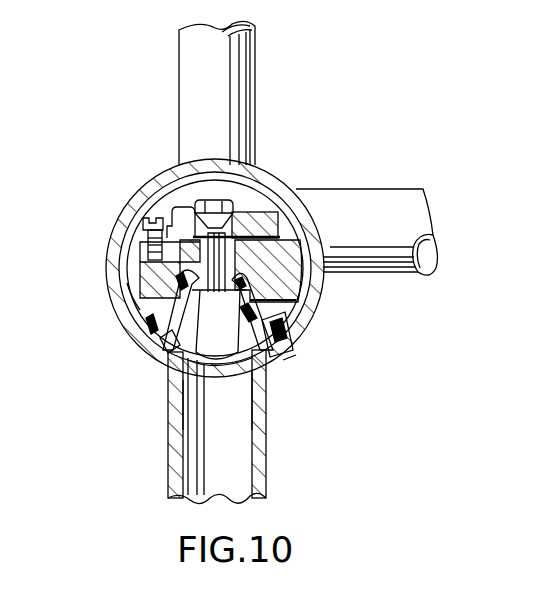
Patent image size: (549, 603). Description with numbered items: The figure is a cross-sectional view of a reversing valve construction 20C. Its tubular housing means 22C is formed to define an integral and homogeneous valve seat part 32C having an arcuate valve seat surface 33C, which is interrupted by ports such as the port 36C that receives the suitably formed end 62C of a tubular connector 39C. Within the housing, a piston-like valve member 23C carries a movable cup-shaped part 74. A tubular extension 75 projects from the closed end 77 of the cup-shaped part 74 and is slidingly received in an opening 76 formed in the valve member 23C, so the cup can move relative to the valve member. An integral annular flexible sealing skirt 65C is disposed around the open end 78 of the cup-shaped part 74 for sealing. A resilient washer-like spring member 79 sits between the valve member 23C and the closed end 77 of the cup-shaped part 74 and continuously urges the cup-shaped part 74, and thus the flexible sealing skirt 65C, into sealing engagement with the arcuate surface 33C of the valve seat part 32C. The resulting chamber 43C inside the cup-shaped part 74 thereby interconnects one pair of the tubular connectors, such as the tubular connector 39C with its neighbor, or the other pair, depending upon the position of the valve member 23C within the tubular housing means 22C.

The reversing valve construction 20C is at (357, 130).
The tubular housing means 22C is at (162, 173).
The opening 76 is at (226, 242).
The tubular extension 75 is at (290, 257).
The resilient washer-like spring member 79 is at (132, 277).
The valve member 23C is at (137, 291).
The cup-shaped part 74 is at (148, 316).
The chamber 43C is at (305, 300).
The closed end 77 is at (197, 318).
The annular flexible sealing skirt 65C is at (298, 338).
The open end 78 is at (157, 360).
The valve seat part 32C is at (287, 366).
The arcuate valve seat surface 33C is at (238, 350).
The port 36C is at (172, 395).
The end of tubular connector 62C is at (272, 392).
The tubular connector 39C is at (170, 463).